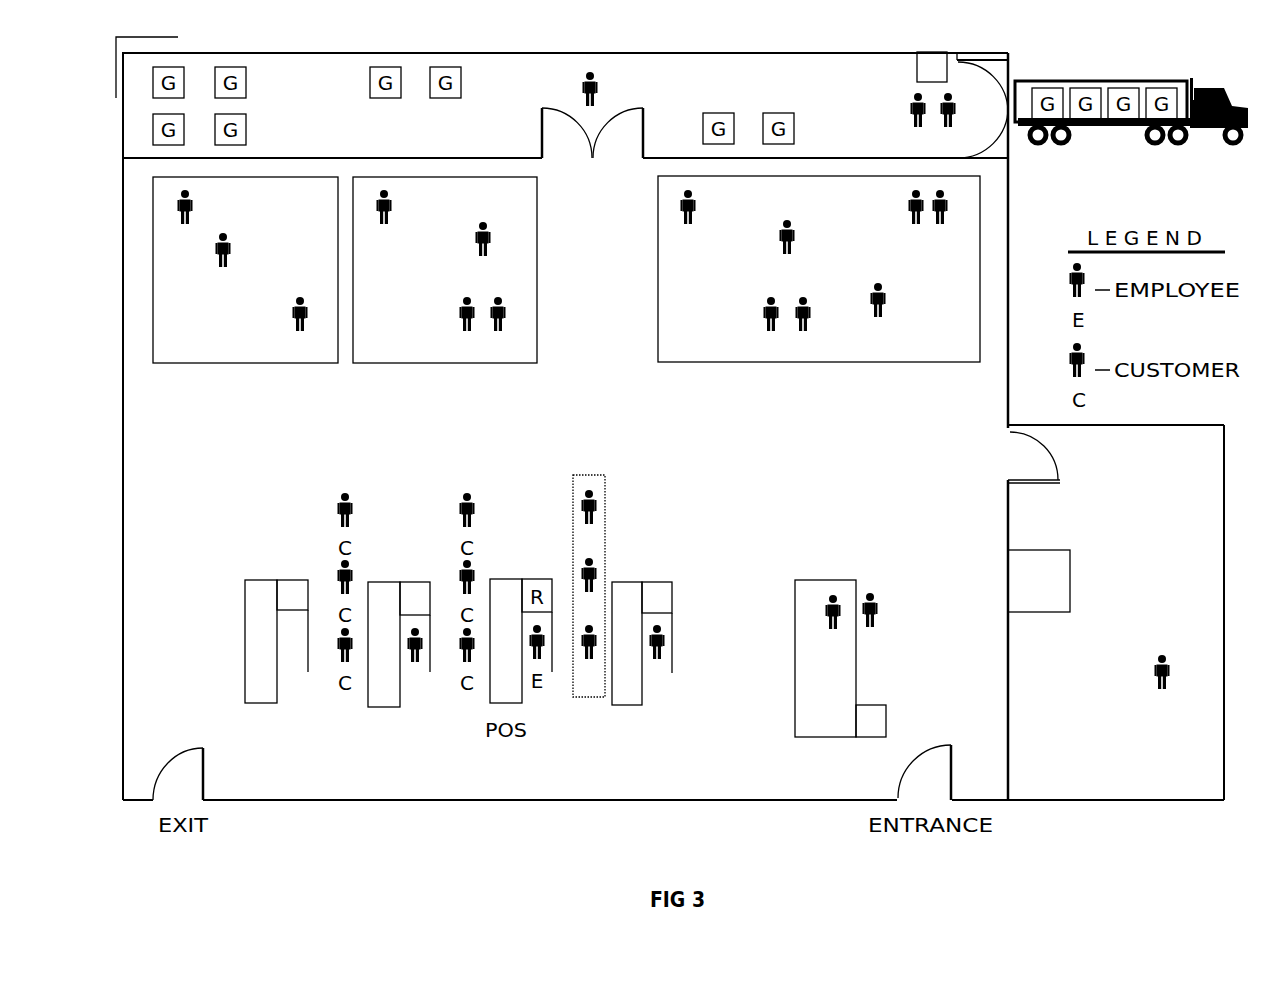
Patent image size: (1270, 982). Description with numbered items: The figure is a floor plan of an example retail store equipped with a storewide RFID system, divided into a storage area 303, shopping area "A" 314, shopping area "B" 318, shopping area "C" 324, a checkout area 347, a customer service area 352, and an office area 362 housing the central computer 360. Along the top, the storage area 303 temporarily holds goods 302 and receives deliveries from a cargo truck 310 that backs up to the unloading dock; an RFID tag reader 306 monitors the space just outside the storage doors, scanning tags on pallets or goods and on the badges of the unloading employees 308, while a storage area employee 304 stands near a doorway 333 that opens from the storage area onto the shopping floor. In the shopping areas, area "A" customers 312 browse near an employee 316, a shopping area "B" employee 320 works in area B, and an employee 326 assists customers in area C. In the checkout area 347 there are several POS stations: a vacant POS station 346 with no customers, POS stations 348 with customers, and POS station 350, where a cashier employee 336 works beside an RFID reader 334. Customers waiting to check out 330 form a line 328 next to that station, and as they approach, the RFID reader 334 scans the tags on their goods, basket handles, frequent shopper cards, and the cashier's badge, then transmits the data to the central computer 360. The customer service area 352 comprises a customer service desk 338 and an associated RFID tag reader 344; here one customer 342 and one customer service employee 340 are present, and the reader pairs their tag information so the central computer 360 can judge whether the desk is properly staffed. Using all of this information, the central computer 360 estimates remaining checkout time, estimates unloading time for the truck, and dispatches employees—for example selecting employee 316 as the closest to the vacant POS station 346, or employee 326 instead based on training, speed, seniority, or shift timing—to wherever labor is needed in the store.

The goods 302 is at (247, 85).
The storage area 303 is at (350, 138).
The storage area employee 304 is at (585, 80).
The RFID tag reader 306 is at (913, 68).
The unloading employees 308 is at (912, 113).
The cargo truck 310 is at (1117, 128).
The area "A" customers 312 is at (192, 215).
The shopping area "A" 314 is at (267, 304).
The employee 316 is at (307, 330).
The shopping area "B" 318 is at (466, 304).
The shopping area "B" employee 320 is at (505, 332).
The shopping area "C" 324 is at (819, 304).
The employee 326 is at (810, 330).
The line 328 is at (637, 546).
The customers waiting to check out 330 is at (597, 575).
The storage door 333 is at (538, 160).
The RFID reader 334 is at (672, 598).
The cashier employee 336 is at (667, 637).
The customer service desk 338 is at (878, 623).
The customer service employee 340 is at (840, 597).
The customer 342 is at (877, 618).
The RFID tag reader 344 is at (872, 705).
The vacant POS station 346 is at (277, 705).
The checkout area 347 is at (430, 783).
The POS stations 348 is at (400, 710).
The POS station 350 is at (691, 648).
The customer service area 352 is at (778, 740).
The central computer 360 is at (1040, 612).
The office area 362 is at (1116, 612).